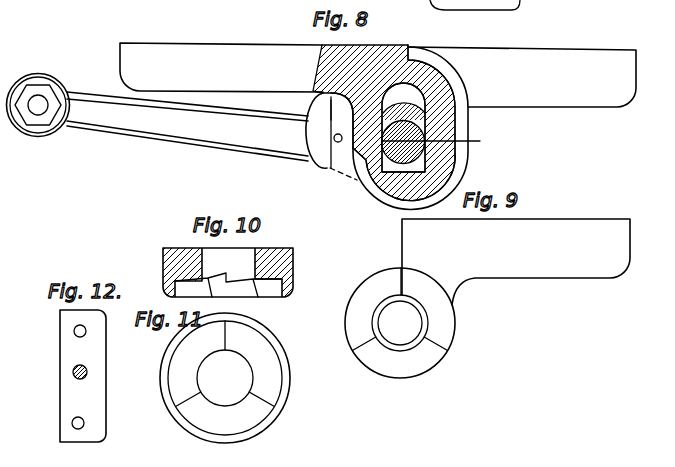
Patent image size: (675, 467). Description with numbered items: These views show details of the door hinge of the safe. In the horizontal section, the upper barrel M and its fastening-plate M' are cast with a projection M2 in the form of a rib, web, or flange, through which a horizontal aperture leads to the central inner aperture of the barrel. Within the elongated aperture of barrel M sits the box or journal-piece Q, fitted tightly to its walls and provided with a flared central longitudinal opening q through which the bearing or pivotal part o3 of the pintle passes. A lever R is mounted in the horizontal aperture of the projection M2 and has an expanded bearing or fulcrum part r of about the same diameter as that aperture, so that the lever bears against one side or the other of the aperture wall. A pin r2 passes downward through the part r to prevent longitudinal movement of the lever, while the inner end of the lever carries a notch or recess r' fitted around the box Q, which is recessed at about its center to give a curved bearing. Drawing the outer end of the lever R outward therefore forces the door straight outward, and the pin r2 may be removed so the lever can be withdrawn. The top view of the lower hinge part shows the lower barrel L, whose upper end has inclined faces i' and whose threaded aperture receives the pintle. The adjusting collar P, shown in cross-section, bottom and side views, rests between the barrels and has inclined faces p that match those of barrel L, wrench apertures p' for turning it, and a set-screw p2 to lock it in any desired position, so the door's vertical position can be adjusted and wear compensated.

In FIG. 8, the fastening-plate M' is at (221, 67).
In FIG. 8, the barrel M is at (384, 123).
In FIG. 8, the projection M2 is at (342, 158).
In FIG. 8, the bar I' is at (483, 127).
In FIG. 9, the bar I' is at (516, 262).
In FIG. 8, the lever R is at (185, 131).
In FIG. 8, the bearing or fulcrum part r is at (330, 142).
In FIG. 8, the pin r2 is at (336, 136).
In FIG. 8, the notch or recess r' is at (403, 105).
In FIG. 8, the central longitudinal opening q is at (420, 122).
In FIG. 8, the box or journal-piece Q is at (410, 158).
In FIG. 8, the bearing or pivotal part o3 is at (439, 150).
In FIG. 9, the barrel L is at (455, 373).
In FIG. 9, the ring spokes i' is at (399, 316).
In FIG. 10, the collar P is at (293, 272).
In FIG. 11, the collar P is at (310, 387).
In FIG. 12, the collar P is at (74, 371).
In FIG. 10, the inclined faces p is at (228, 292).
In FIG. 11, the inclined faces p is at (225, 370).
In FIG. 12, the apertures p' is at (65, 377).
In FIG. 12, the set-screw p2 is at (87, 372).